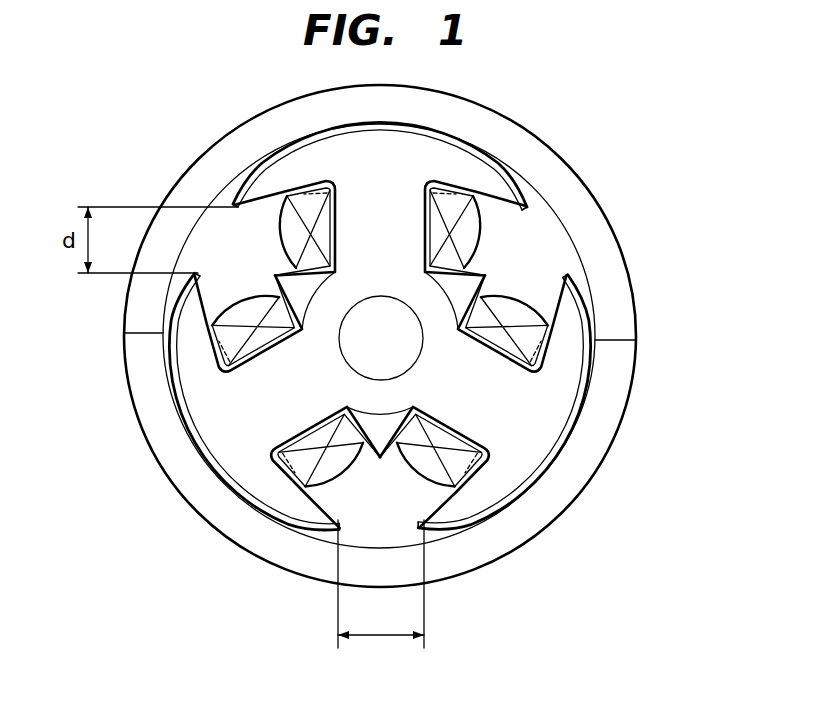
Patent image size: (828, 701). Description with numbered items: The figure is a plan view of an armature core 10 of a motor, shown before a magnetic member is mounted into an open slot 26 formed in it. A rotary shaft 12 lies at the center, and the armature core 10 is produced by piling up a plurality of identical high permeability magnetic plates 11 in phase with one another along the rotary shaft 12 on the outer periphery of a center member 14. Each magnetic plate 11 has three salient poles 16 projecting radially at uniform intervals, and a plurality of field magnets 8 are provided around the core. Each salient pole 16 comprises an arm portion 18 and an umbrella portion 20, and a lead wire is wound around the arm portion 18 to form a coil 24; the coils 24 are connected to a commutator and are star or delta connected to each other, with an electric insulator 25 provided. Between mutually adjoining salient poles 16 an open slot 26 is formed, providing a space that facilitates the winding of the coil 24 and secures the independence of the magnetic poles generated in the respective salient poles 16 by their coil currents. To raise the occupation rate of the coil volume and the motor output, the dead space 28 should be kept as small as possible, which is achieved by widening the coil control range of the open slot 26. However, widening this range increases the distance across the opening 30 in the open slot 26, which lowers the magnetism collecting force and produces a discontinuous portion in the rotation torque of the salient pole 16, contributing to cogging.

The field magnet 8 is at (567, 182).
The armature core 10 is at (518, 169).
The magnetic plate 11 is at (506, 418).
The rotary shaft 12 is at (425, 343).
The center member 14 is at (488, 306).
The salient pole 16 is at (220, 182).
The arm portion 18 is at (493, 314).
The umbrella portion 20 is at (475, 328).
The coil 24 is at (462, 370).
The electric insulator 25 is at (298, 184).
The open slot 26 is at (235, 257).
The dead space 28 is at (312, 188).
The opening 30 is at (372, 532).